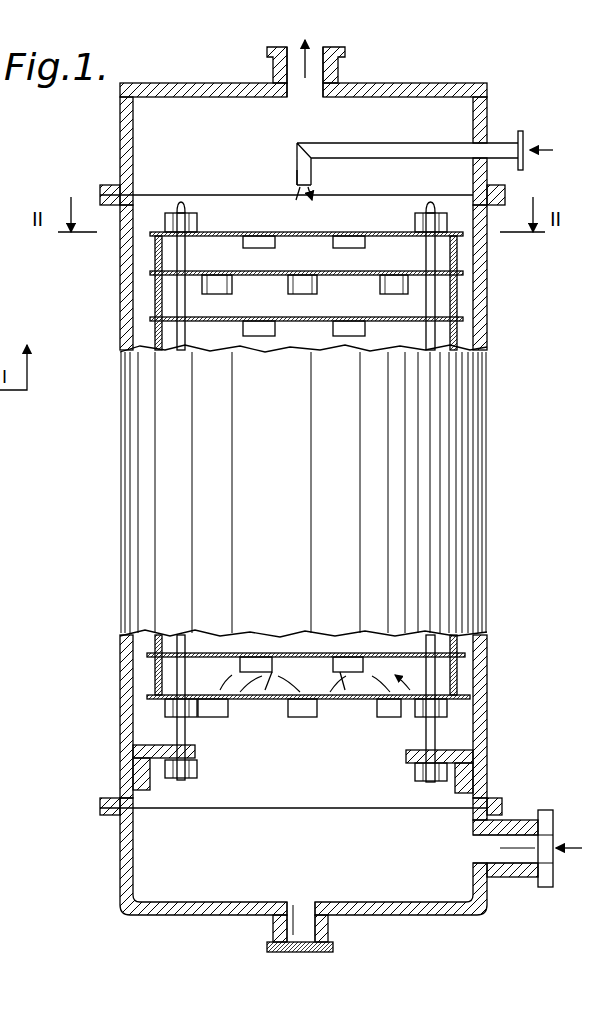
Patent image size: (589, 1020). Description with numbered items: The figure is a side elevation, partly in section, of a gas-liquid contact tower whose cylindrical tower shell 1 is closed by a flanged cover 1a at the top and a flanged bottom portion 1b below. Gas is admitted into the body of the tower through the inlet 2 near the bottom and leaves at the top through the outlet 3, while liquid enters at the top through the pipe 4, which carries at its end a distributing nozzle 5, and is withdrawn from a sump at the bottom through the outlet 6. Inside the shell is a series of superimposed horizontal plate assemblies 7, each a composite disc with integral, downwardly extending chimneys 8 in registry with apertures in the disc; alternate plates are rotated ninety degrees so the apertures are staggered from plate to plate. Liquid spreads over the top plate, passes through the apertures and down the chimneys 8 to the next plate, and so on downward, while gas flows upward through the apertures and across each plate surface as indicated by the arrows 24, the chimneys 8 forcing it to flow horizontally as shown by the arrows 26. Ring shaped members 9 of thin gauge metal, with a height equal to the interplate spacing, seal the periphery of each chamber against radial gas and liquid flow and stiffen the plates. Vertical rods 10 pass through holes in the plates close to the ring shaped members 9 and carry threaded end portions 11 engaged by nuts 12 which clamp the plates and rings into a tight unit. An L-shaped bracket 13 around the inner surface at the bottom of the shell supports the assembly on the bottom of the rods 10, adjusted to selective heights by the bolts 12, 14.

The cylindrical tower shell 1 is at (487, 432).
The flanged cover 1a is at (120, 132).
The flanged bottom portion 1b is at (120, 870).
The inlet 2 is at (541, 815).
The outlet 3 is at (340, 61).
The pipe 4 is at (528, 150).
The distributing nozzle 5 is at (296, 152).
The outlet 6 is at (335, 946).
The horizontal plate assemblies 7 is at (312, 257).
The chimneys 8 is at (235, 282).
The ring shaped members 9 is at (150, 233).
The vertical rods 10 is at (158, 290).
The threaded end portions 11 is at (181, 204).
The nuts 12 is at (200, 222).
The L-shaped bracket 13 is at (473, 755).
The bolts 14 is at (200, 772).
The arrows 24 is at (265, 648).
The arrows 26 is at (315, 698).